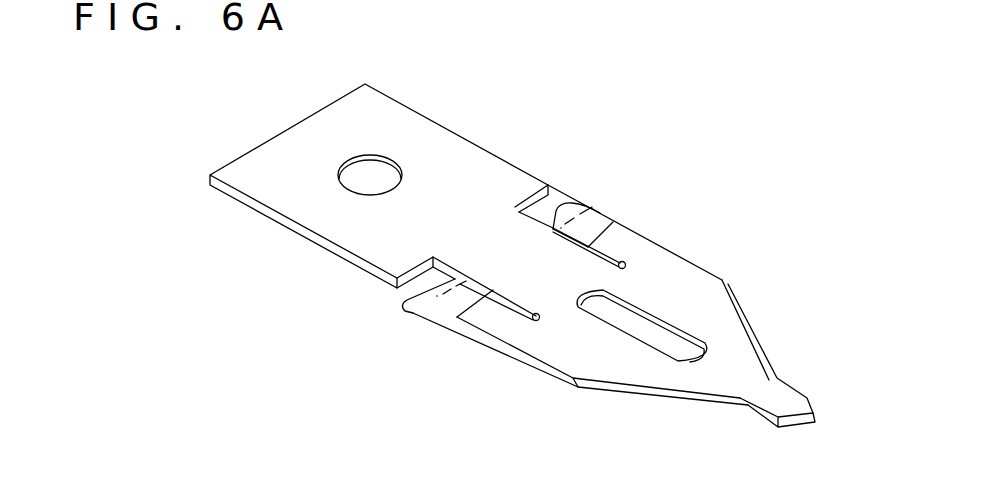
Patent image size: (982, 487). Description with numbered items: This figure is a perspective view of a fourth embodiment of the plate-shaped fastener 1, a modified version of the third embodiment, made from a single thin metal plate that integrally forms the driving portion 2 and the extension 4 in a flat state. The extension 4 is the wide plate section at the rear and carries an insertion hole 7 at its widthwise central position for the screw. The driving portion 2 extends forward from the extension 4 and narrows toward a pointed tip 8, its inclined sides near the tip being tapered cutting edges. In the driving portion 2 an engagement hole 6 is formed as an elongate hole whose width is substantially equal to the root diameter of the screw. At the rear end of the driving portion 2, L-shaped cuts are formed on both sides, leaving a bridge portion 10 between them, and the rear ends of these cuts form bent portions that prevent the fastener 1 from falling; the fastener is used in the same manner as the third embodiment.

The plate-shaped fastener 1 is at (260, 212).
The driving portion 2 is at (610, 370).
The extension 4 is at (428, 142).
The engagement hole 6 is at (647, 330).
The insertion hole 7 is at (365, 176).
The pointed tip 8 is at (817, 423).
The bridge portion 10 is at (512, 253).